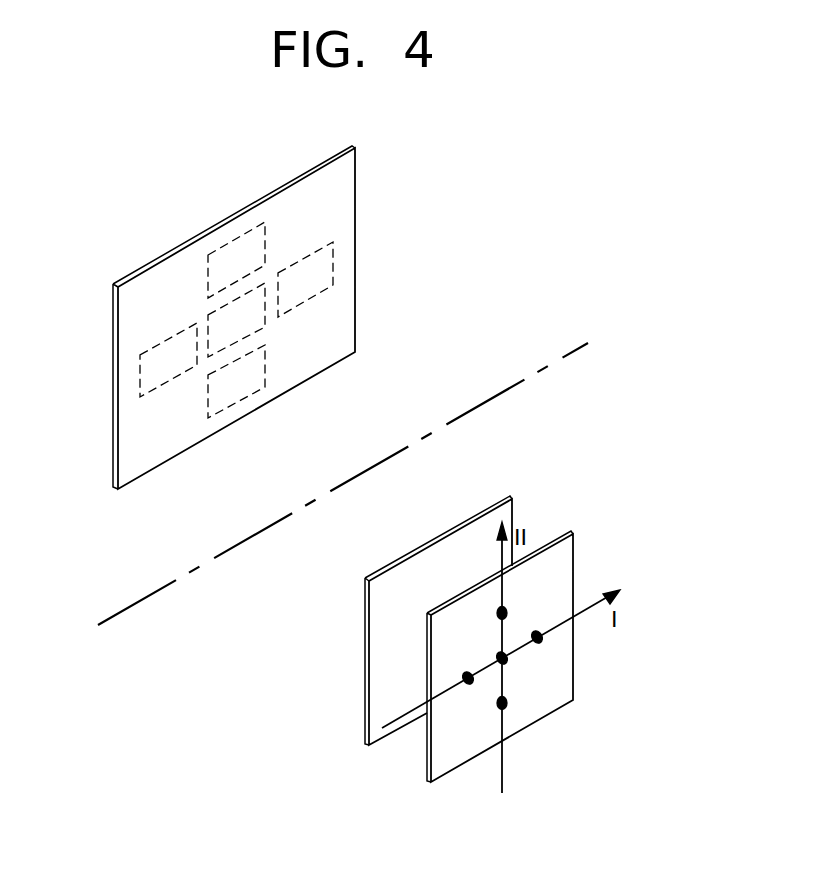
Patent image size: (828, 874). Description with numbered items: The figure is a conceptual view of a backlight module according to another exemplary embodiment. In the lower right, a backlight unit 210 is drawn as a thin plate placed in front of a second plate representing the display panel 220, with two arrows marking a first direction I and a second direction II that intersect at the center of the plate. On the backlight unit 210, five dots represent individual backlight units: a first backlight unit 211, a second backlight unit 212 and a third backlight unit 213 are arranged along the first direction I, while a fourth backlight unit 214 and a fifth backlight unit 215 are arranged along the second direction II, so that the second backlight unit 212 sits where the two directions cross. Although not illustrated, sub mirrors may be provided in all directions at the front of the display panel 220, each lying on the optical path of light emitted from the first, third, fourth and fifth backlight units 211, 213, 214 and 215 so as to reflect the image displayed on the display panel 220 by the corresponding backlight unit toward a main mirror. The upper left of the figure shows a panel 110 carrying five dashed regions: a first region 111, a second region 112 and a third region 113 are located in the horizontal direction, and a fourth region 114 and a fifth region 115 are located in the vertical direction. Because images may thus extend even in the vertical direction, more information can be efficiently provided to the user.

The display panel 110 is at (340, 203).
The first region 111 is at (328, 261).
The second region 112 is at (263, 300).
The third region 113 is at (147, 371).
The fourth region 114 is at (234, 252).
The fifth region 115 is at (240, 390).
The backlight unit 210 is at (578, 530).
The display panel 220 is at (472, 510).
The first backlight unit 211 is at (468, 683).
The second backlight unit 212 is at (507, 662).
The third backlight unit 213 is at (542, 640).
The fourth backlight unit 214 is at (506, 708).
The fifth backlight unit 215 is at (507, 611).